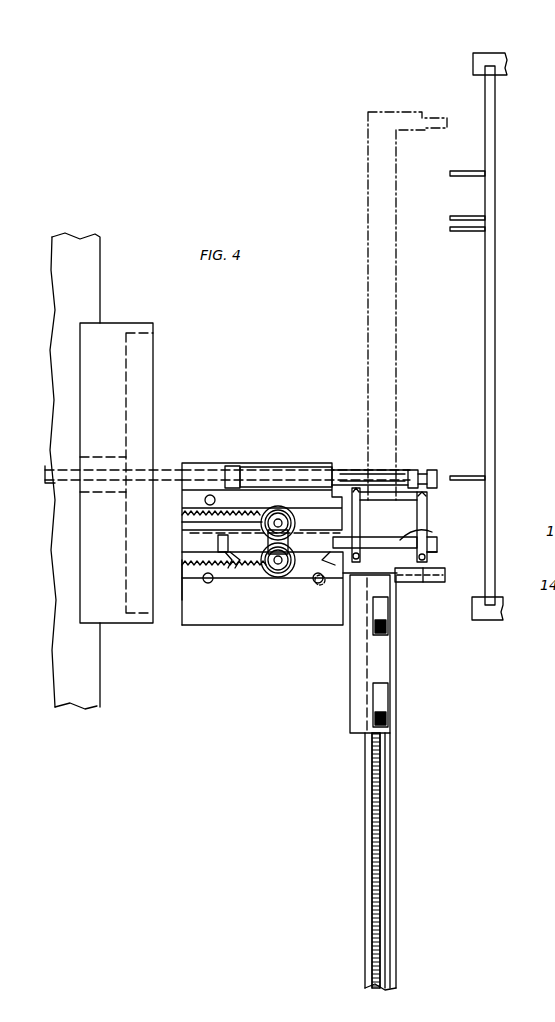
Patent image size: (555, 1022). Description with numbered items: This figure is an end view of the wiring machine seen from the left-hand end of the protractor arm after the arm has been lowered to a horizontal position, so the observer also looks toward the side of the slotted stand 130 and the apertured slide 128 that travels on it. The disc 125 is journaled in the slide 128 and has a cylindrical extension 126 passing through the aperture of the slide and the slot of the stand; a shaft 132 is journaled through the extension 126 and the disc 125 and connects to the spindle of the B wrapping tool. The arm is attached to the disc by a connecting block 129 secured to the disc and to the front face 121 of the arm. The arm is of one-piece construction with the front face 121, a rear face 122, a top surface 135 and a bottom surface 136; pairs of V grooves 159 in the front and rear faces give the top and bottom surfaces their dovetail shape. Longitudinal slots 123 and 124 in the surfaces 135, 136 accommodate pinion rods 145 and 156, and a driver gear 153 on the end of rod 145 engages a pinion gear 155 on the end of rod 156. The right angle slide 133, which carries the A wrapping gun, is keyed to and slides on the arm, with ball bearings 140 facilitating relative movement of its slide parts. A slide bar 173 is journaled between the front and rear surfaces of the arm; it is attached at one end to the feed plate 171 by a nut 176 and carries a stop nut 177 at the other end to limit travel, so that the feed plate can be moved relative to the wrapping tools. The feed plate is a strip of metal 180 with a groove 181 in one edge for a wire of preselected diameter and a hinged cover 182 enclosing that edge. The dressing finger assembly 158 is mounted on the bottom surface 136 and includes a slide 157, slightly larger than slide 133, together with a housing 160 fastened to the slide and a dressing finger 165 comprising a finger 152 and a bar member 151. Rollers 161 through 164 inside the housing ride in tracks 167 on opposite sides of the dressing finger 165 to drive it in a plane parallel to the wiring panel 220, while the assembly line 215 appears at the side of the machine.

The front face 121 is at (232, 530).
The rear face 122 is at (342, 545).
The longitudinal slot 123 is at (300, 520).
The longitudinal slot 124 is at (265, 567).
The disc 125 is at (153, 359).
The cylindrical extension 126 is at (98, 457).
The apertured slide 128 is at (113, 326).
The connecting block 129 is at (167, 530).
The slotted stand 130 is at (100, 680).
The shaft 132 is at (50, 470).
The right angle slide 133 is at (258, 460).
The top surface 135 is at (240, 530).
The bottom surface 136 is at (245, 567).
The ball bearings 140 is at (205, 495).
The pinion rod 145 is at (282, 522).
The bar member 151 is at (365, 850).
The finger 152 is at (405, 585).
The driver gear 153 is at (278, 518).
The pinion gear 155 is at (273, 577).
The pinion rod 156 is at (282, 568).
The slide 157 is at (311, 647).
The dressing finger assembly 158 is at (410, 781).
The V grooves 159 is at (226, 567).
The housing 160 is at (350, 712).
The roller 161 is at (390, 722).
The roller 164 is at (390, 632).
The dressing finger 165 is at (441, 930).
The grooves or tracks 167 is at (383, 848).
The feed plate 171 is at (356, 488).
The slide bar 173 is at (432, 534).
The nut 176 is at (437, 548).
The stop nut 177 is at (205, 540).
The strip of metal 180 is at (427, 522).
The groove 181 is at (415, 470).
The cover 182 is at (417, 497).
The assembly line 215 is at (487, 56).
The wiring panel 220 is at (496, 118).